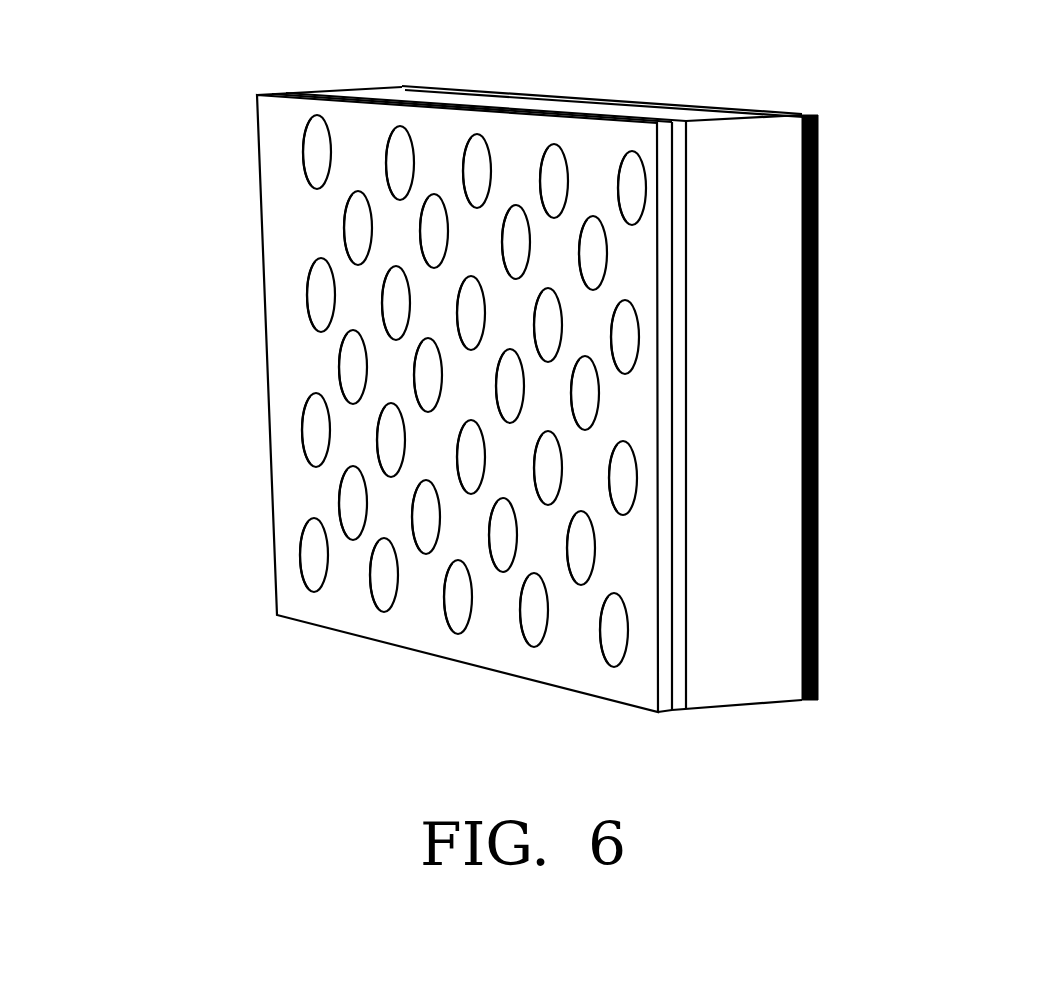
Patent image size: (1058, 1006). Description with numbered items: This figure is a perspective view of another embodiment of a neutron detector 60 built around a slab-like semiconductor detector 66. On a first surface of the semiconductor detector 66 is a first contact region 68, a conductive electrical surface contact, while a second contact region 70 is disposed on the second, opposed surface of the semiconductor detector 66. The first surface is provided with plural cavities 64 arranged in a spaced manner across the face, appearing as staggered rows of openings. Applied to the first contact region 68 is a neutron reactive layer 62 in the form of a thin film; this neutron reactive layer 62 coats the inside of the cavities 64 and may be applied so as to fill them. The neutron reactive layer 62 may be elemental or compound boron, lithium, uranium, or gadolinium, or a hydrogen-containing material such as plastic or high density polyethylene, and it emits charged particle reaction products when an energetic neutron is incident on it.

The neutron detector 60 is at (205, 208).
The neutron reactive layer 62 is at (292, 337).
The cavities 64 is at (340, 498).
The semiconductor detector 66 is at (748, 182).
The first contact region 68 is at (677, 138).
The second contact region 70 is at (820, 215).